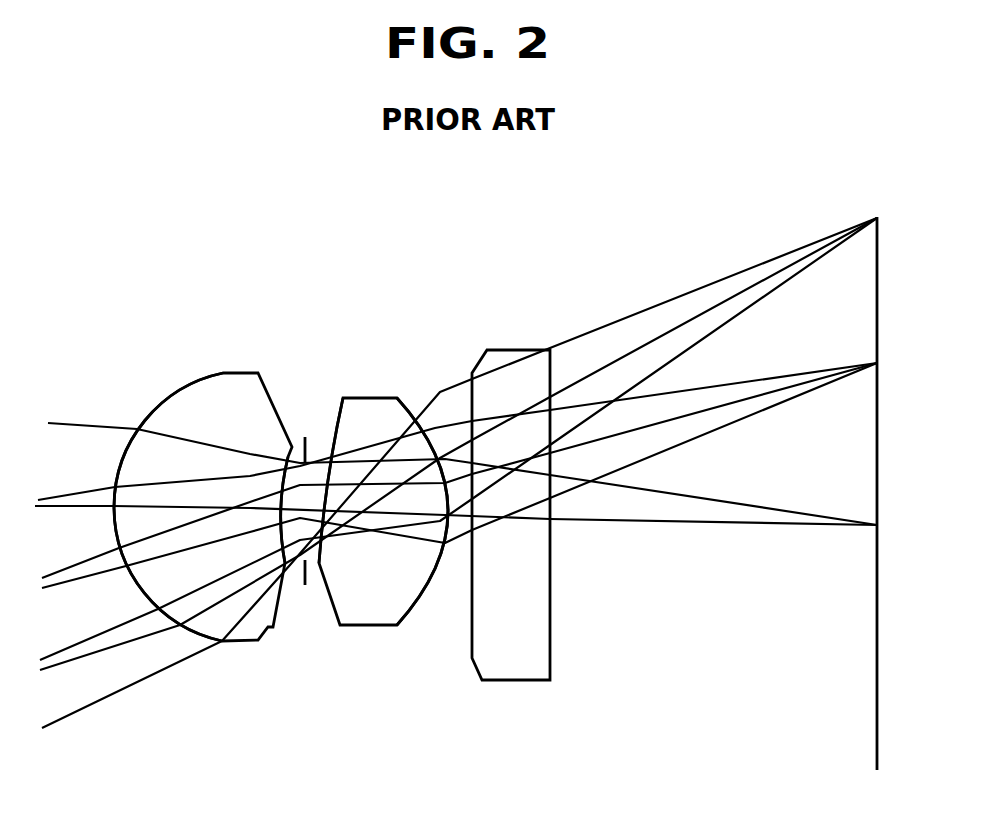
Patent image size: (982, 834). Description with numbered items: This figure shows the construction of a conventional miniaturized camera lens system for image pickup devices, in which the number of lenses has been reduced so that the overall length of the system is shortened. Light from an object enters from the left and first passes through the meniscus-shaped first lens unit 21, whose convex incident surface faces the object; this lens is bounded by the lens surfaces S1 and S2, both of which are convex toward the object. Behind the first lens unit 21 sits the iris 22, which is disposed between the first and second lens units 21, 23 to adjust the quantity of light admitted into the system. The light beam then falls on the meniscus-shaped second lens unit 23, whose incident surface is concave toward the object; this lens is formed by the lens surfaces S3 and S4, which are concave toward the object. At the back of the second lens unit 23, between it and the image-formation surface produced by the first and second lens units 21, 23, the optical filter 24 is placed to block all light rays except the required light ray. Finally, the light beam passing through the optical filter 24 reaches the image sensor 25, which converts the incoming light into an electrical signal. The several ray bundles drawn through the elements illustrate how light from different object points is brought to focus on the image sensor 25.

The first lens unit 21 is at (238, 637).
The iris 22 is at (307, 596).
The second lens unit 23 is at (378, 608).
The optical filter 24 is at (513, 662).
The image sensor 25 is at (858, 632).
The lens surface S1 is at (163, 390).
The lens surface S2 is at (283, 572).
The lens surface S3 is at (336, 466).
The lens surface S4 is at (429, 424).